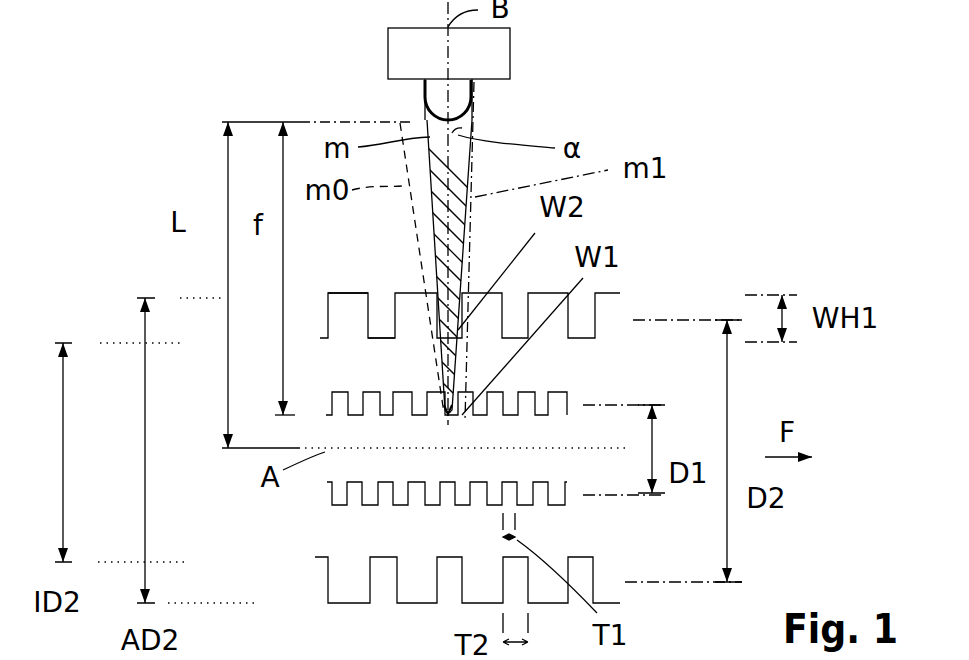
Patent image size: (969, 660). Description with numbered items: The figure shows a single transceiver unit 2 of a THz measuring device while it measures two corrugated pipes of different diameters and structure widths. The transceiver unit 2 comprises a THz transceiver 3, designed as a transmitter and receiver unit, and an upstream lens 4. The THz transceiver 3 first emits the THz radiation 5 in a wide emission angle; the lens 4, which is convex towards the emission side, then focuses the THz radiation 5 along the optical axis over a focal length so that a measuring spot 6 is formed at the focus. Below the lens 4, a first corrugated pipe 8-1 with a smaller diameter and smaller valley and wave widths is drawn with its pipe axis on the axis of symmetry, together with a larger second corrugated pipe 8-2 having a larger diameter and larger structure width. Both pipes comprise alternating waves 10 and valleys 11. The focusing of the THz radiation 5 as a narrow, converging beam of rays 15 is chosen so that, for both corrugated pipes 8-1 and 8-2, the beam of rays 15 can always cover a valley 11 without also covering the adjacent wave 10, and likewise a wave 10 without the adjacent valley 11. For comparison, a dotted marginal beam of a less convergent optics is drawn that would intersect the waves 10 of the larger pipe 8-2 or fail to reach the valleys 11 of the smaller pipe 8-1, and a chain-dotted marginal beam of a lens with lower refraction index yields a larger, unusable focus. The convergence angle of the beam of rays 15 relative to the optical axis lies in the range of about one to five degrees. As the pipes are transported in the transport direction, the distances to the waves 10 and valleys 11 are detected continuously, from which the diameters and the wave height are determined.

The transceiver unit 2 is at (350, 58).
The THz transceiver 3 is at (510, 52).
The lens 4 is at (472, 88).
The THz radiation 5 is at (425, 105).
The measuring spot 6 is at (443, 410).
The first corrugated pipe 8-1 is at (567, 392).
The second corrugated pipe 8-2 is at (610, 293).
The waves 10 is at (336, 293).
The valleys 11 is at (380, 337).
The beam of rays 15 is at (463, 183).